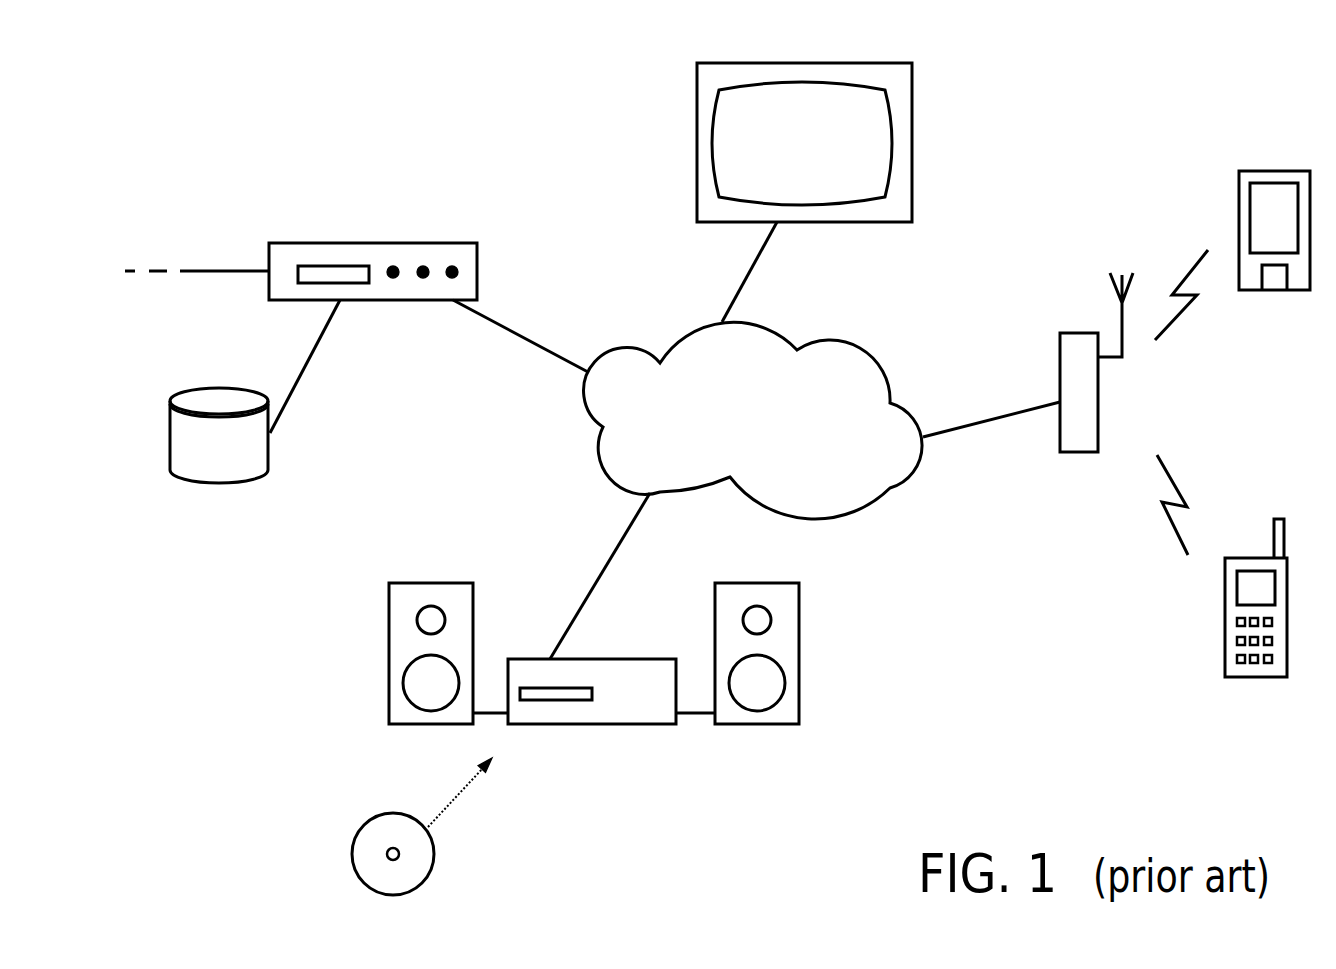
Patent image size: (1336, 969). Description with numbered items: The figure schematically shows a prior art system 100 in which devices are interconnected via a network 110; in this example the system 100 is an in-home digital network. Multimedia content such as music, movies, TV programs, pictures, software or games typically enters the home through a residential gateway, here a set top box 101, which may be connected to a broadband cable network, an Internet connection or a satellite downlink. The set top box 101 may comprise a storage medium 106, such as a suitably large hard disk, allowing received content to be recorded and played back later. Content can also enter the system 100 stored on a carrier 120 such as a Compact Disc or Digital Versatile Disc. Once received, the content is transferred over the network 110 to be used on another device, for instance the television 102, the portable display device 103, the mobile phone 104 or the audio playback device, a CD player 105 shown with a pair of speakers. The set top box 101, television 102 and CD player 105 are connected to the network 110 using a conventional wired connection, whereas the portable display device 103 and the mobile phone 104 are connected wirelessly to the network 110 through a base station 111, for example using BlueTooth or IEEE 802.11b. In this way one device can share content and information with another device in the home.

The system 100 is at (387, 107).
The set top box 101 is at (367, 240).
The television 102 is at (695, 138).
The portable display device 103 is at (1268, 171).
The mobile phone 104 is at (1225, 655).
The CD player 105 is at (647, 724).
The storage medium 106 is at (170, 468).
The network 110 is at (695, 333).
The base station 111 is at (1073, 333).
The carrier 120 is at (355, 828).